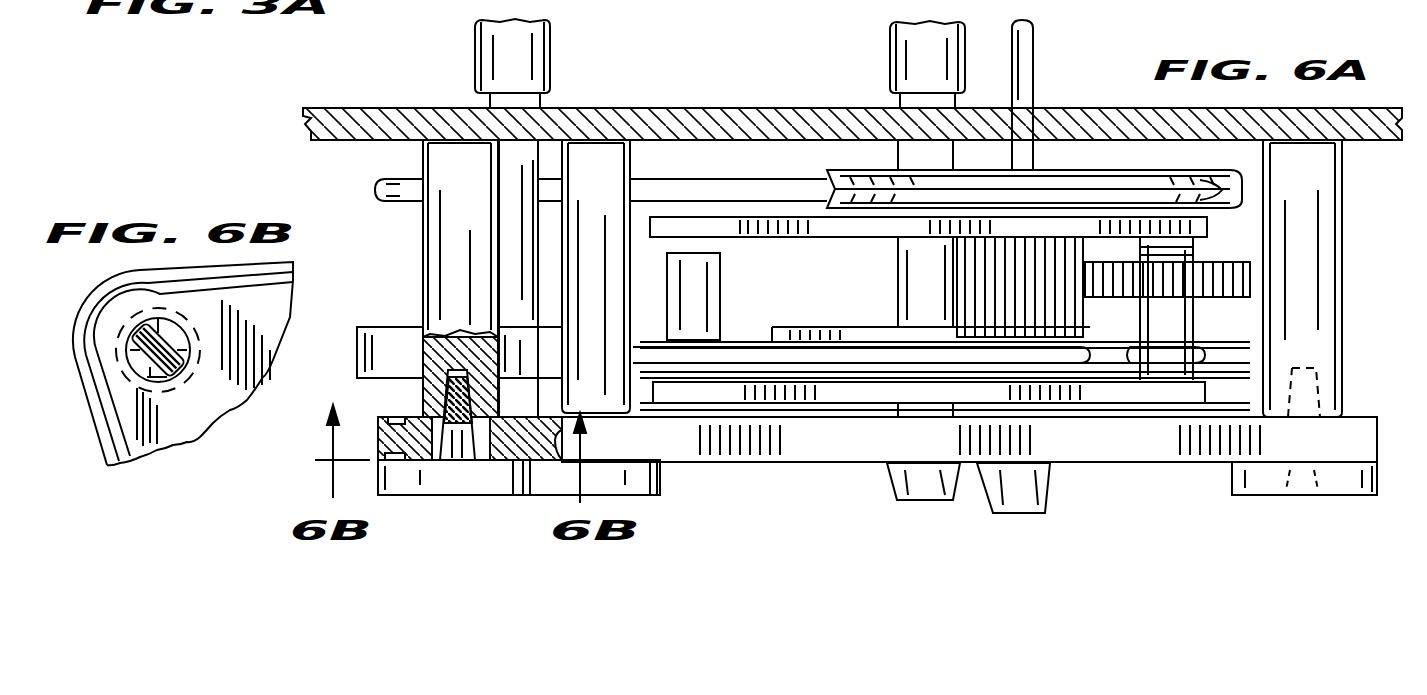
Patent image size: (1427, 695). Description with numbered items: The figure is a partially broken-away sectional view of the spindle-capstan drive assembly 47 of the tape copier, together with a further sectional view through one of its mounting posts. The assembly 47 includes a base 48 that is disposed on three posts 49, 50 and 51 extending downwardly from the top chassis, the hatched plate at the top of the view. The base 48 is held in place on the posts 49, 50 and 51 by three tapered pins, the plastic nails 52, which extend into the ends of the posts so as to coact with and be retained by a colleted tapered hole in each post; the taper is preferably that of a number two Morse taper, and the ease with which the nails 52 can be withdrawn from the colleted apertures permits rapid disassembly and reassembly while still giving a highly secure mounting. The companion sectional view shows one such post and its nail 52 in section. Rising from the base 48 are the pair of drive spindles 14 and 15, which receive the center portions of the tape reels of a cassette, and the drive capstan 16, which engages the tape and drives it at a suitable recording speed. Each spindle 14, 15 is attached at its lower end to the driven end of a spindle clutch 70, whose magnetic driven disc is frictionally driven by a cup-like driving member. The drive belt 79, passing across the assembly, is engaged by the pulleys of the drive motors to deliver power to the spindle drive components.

In FIG. 6A, the drive spindle 14 is at (552, 52).
In FIG. 6A, the drive spindle 15 is at (888, 48).
In FIG. 6A, the drive capstan 16 is at (1036, 60).
In FIG. 6A, the spindle-capstan drive assembly 47 is at (1172, 463).
In FIG. 6A, the base 48 is at (835, 463).
In FIG. 6B, the base 48 is at (267, 324).
In FIG. 6A, the post 49 is at (430, 226).
In FIG. 6B, the post 49 is at (167, 392).
In FIG. 6A, the post 50 is at (1335, 252).
In FIG. 6A, the post 51 is at (617, 166).
In FIG. 6A, the plastic nail 52 is at (472, 493).
In FIG. 6B, the plastic nail 52 is at (143, 340).
In FIG. 6A, the spindle clutch 70 is at (352, 365).
In FIG. 6A, the drive belt 79 is at (738, 175).